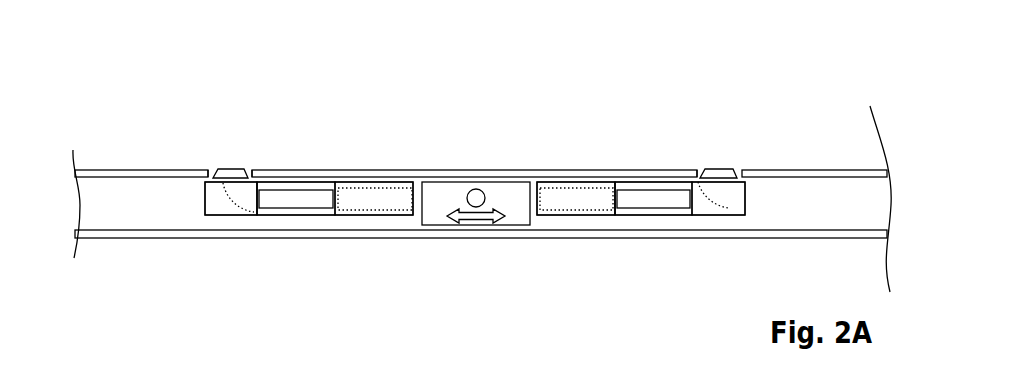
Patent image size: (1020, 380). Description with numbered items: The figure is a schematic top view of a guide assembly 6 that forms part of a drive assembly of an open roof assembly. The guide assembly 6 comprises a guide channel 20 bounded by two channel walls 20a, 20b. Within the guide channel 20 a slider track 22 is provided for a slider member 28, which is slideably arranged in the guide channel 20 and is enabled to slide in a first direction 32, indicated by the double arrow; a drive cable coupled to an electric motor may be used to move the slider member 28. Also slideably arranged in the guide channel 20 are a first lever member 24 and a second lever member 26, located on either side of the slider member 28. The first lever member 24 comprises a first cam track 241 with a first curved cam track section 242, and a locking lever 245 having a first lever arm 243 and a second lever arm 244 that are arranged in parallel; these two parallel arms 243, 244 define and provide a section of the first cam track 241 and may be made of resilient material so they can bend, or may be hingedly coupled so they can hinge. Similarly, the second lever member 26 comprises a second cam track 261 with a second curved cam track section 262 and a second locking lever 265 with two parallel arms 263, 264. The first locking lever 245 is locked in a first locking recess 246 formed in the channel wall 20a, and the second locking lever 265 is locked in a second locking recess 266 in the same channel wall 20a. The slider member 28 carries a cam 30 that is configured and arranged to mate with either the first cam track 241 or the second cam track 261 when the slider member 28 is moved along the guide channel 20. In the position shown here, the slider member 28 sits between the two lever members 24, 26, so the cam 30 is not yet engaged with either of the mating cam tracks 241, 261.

The guide assembly 6 is at (363, 96).
The guide channel 20 is at (482, 225).
The channel wall 20a is at (120, 176).
The channel wall 20b is at (140, 235).
The slider track 22 is at (160, 190).
The first lever member 24 is at (300, 217).
The first cam track 241 is at (357, 200).
The first curved cam track section 242 is at (234, 190).
The first lever arm 243 is at (278, 212).
The second lever arm 244 is at (273, 185).
The locking lever 245 is at (222, 166).
The first locking recess 246 is at (246, 167).
The second lever member 26 is at (651, 215).
The second cam track 261 is at (593, 185).
The second curved cam track section 262 is at (710, 200).
The parallel arm 263 is at (628, 213).
The parallel arm 264 is at (625, 185).
The second locking lever 265 is at (722, 166).
The second locking recess 266 is at (738, 167).
The slider member 28 is at (433, 218).
The cam 30 is at (476, 198).
The first direction 32 is at (483, 217).